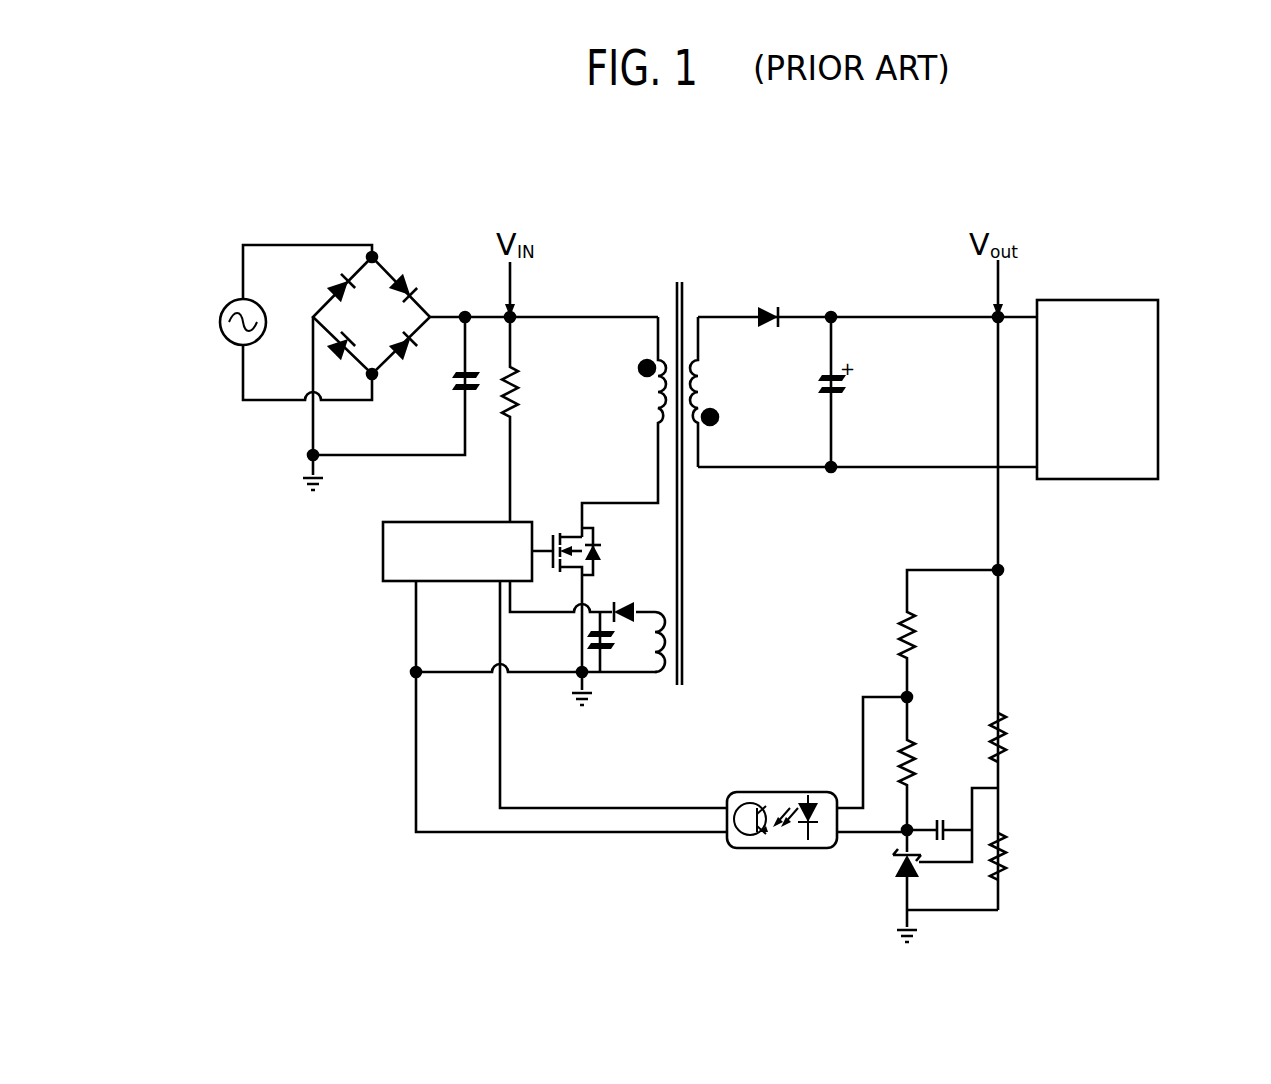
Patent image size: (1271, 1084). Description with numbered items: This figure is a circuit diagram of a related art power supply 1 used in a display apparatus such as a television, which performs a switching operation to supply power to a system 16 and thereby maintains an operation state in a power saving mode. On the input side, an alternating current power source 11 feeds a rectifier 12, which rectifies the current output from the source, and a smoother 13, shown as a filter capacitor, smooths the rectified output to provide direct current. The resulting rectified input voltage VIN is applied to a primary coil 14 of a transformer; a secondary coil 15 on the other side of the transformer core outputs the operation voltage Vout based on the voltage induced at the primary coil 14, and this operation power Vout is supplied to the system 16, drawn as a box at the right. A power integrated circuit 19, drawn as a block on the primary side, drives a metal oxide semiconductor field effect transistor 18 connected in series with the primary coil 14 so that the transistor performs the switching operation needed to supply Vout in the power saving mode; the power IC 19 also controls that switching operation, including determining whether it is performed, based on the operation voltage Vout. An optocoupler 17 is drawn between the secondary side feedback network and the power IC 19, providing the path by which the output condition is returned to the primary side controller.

The power supply 1 is at (678, 203).
The alternating current (AC) power source 11 is at (220, 325).
The rectifier 12 is at (400, 280).
The smoother 13 is at (456, 390).
The primary coil 14 is at (655, 392).
The secondary coil 15 is at (705, 392).
The system 16 is at (1095, 300).
The optocoupler 17 is at (778, 792).
The metal oxide semiconductor field effect transistor (MOSFET) 18 is at (600, 553).
The power integrated circuit (IC) 19 is at (383, 551).